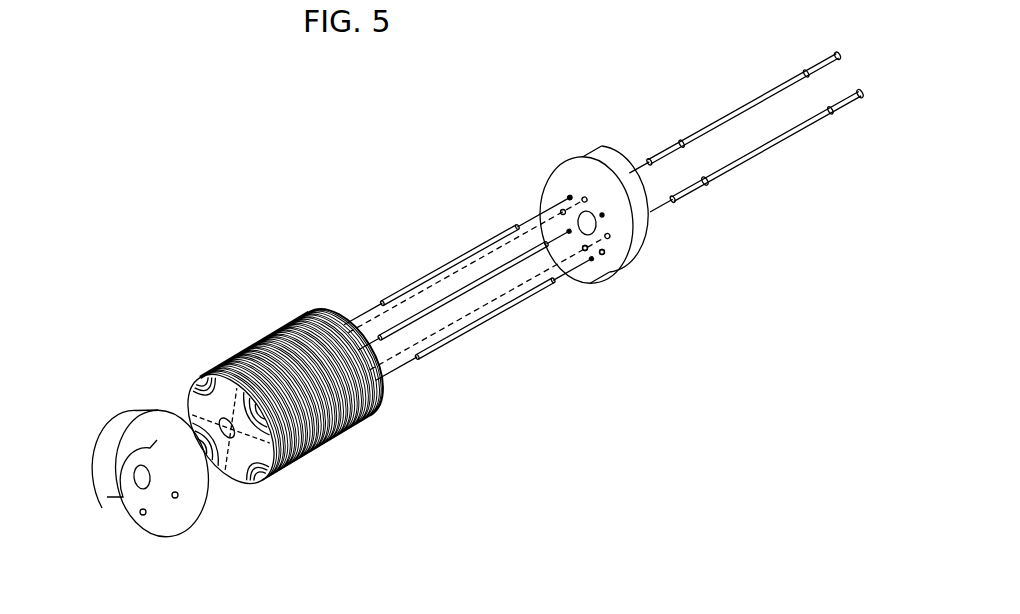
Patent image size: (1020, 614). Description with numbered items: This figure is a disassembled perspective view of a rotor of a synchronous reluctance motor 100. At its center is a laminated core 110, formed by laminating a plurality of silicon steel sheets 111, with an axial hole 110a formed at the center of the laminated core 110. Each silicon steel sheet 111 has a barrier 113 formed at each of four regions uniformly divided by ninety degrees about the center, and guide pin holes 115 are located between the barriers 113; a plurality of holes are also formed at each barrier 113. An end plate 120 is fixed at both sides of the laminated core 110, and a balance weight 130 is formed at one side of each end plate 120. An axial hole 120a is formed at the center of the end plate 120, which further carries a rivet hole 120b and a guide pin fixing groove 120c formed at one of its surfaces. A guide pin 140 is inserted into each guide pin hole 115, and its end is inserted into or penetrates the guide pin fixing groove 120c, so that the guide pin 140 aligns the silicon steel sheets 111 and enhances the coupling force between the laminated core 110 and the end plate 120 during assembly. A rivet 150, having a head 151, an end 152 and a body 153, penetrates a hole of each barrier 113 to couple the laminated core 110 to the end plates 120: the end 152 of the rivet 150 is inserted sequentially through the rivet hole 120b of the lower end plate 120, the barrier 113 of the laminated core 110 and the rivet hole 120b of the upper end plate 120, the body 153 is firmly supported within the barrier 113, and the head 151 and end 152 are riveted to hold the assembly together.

The rotor of a synchronous reluctance motor 100 is at (317, 190).
The laminated core 110 is at (290, 320).
The axial hole 110a is at (277, 473).
The silicon steel sheet 111 is at (272, 352).
The barrier 113 is at (192, 402).
The guide pin hole 115 is at (205, 392).
The end plate 120 is at (138, 410).
The axial hole 120a is at (183, 522).
The rivet hole 120b is at (143, 515).
The guide pin fixing groove 120c is at (570, 197).
The balance weight 130 is at (113, 435).
The guide pin 140 is at (458, 256).
The rivet 150 is at (718, 115).
The head 151 is at (860, 97).
The end 152 is at (710, 183).
The body 153 is at (760, 153).